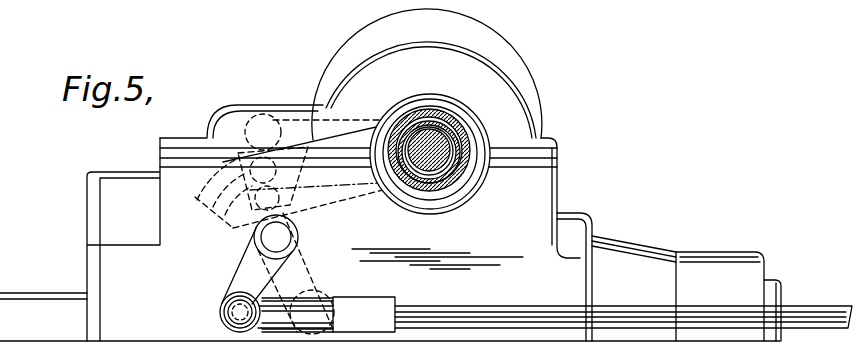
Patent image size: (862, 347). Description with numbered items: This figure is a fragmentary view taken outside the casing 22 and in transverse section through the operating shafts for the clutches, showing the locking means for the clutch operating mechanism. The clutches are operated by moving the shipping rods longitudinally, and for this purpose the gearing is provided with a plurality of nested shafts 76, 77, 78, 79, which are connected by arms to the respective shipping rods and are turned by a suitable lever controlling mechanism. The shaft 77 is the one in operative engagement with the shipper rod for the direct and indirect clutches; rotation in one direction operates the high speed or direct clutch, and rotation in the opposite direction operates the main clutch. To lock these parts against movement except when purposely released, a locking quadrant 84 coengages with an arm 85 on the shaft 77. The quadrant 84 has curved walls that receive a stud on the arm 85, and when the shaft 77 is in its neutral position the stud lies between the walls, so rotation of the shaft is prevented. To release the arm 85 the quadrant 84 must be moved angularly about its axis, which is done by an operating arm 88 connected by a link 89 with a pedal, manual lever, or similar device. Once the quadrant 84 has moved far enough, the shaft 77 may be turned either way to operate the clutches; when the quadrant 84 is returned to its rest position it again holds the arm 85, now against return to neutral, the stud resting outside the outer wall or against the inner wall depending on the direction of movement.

The casing 22 is at (390, 175).
The nested shaft 76 is at (446, 148).
The nested shaft 77 is at (466, 171).
The nested shaft 78 is at (435, 188).
The nested shaft 79 is at (452, 186).
The locking quadrant 84 is at (230, 228).
The arm 85 is at (342, 135).
The operating arm 88 is at (243, 270).
The link 89 is at (455, 308).